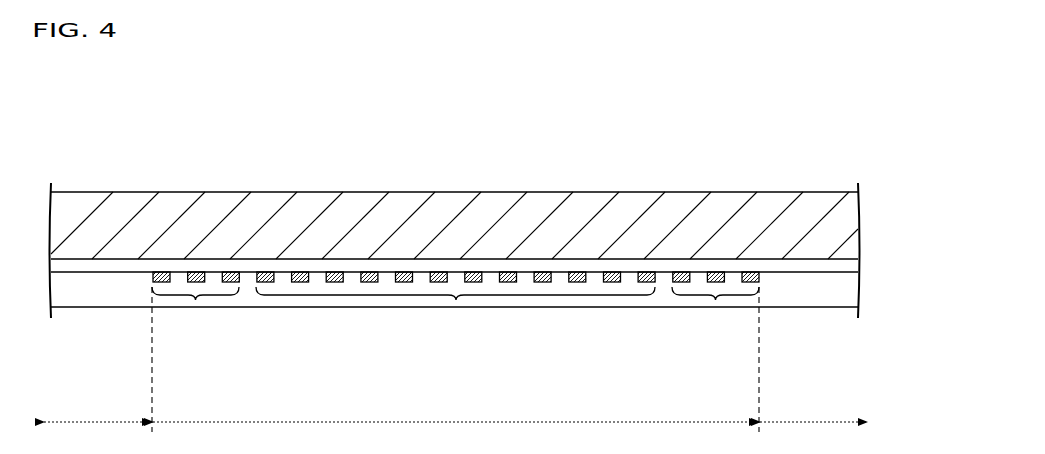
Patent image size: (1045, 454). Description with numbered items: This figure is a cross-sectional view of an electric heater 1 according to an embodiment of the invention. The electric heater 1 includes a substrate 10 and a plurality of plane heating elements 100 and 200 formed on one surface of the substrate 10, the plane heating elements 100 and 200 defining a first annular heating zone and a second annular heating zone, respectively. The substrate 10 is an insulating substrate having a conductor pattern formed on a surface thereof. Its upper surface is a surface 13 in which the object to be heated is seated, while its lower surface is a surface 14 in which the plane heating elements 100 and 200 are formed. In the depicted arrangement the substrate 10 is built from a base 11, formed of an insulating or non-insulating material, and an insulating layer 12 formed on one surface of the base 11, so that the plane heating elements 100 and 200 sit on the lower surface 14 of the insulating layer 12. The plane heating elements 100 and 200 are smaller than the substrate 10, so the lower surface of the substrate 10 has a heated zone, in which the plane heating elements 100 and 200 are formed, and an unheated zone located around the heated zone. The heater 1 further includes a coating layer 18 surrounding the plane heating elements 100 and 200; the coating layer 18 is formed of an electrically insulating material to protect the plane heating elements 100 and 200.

The electric heater 1 is at (838, 160).
The substrate 10 is at (908, 218).
The base 11 is at (848, 228).
The insulating layer 12 is at (848, 265).
The surface 13 is at (222, 192).
The surface 14 is at (165, 272).
The coating layer 18 is at (848, 290).
The plane heating element 100 is at (456, 300).
The plane heating element 200 is at (196, 300).